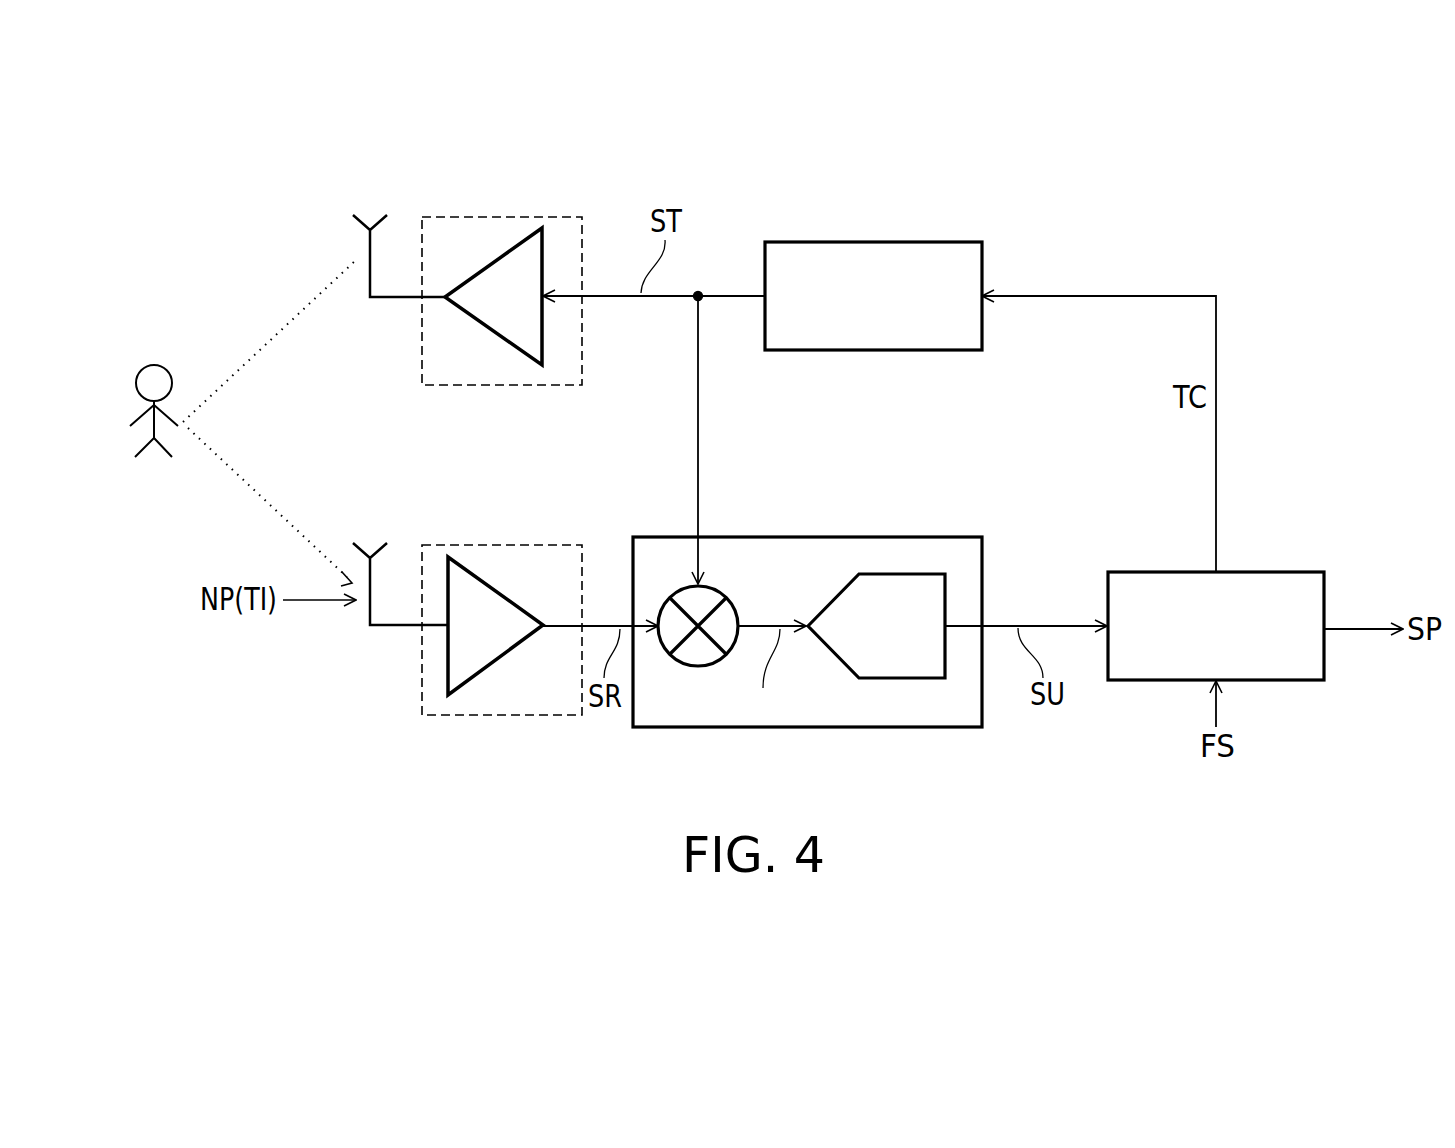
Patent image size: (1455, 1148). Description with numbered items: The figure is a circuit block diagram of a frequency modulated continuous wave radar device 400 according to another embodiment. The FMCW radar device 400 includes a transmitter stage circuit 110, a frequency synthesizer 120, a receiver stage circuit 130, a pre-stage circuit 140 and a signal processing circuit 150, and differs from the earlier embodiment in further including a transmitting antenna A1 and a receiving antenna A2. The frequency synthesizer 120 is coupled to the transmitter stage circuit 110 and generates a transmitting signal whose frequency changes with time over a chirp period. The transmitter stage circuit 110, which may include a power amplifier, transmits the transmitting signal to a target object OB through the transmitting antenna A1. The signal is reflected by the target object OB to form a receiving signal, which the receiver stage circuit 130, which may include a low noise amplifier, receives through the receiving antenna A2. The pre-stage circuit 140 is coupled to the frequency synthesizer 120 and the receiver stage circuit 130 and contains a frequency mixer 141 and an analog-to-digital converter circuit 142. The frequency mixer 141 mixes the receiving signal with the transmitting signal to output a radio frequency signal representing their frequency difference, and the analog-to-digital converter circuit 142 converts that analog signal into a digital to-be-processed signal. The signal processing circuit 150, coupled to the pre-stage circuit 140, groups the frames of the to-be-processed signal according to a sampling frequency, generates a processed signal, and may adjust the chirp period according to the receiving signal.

The transmitter stage circuit 110 is at (503, 217).
The frequency synthesizer 120 is at (873, 242).
The receiver stage circuit 130 is at (503, 545).
The pre-stage circuit 140 is at (808, 537).
The frequency mixer 141 is at (698, 667).
The analog-to-digital converter circuit 142 is at (833, 655).
The signal processing circuit 150 is at (1272, 572).
The FMCW radar device 400 is at (1452, 832).
The transmitting antenna A1 is at (399, 234).
The receiving antenna A2 is at (400, 563).
The target object OB is at (130, 411).